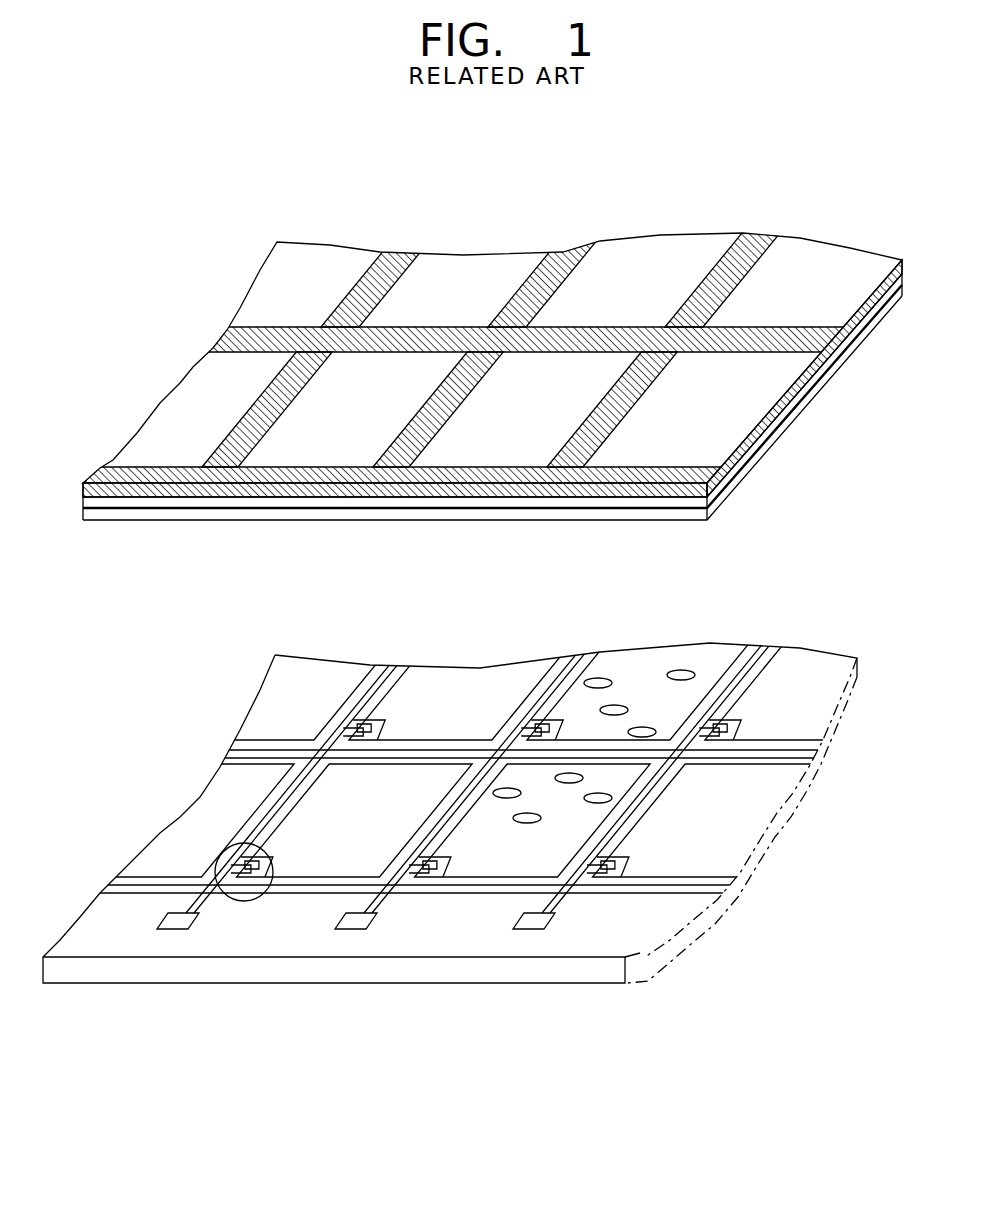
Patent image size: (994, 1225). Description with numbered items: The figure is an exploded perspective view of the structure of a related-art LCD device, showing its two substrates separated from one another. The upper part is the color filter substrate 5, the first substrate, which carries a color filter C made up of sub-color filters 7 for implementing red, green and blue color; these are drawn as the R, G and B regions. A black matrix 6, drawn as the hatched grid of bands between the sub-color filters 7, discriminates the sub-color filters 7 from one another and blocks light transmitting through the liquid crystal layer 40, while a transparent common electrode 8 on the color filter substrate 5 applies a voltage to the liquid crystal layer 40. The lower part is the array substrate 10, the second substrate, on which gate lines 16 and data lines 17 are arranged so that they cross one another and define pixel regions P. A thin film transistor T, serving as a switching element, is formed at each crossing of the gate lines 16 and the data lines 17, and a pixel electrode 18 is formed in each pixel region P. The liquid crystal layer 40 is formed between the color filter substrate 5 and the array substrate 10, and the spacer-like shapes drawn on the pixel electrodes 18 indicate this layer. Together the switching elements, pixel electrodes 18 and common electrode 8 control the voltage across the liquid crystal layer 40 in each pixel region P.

The color filter C is at (175, 358).
The color filter substrate 5 is at (680, 503).
The black matrix 6 is at (737, 483).
The sub-color filters 7 is at (760, 388).
The transparent common electrode 8 is at (665, 512).
The array substrate 10 is at (440, 972).
The gate lines 16 is at (500, 893).
The data lines 17 is at (377, 903).
The pixel electrode 18 is at (603, 843).
The liquid crystal layer 40 is at (603, 707).
The pixel region P is at (683, 823).
The thin film transistor T is at (249, 915).